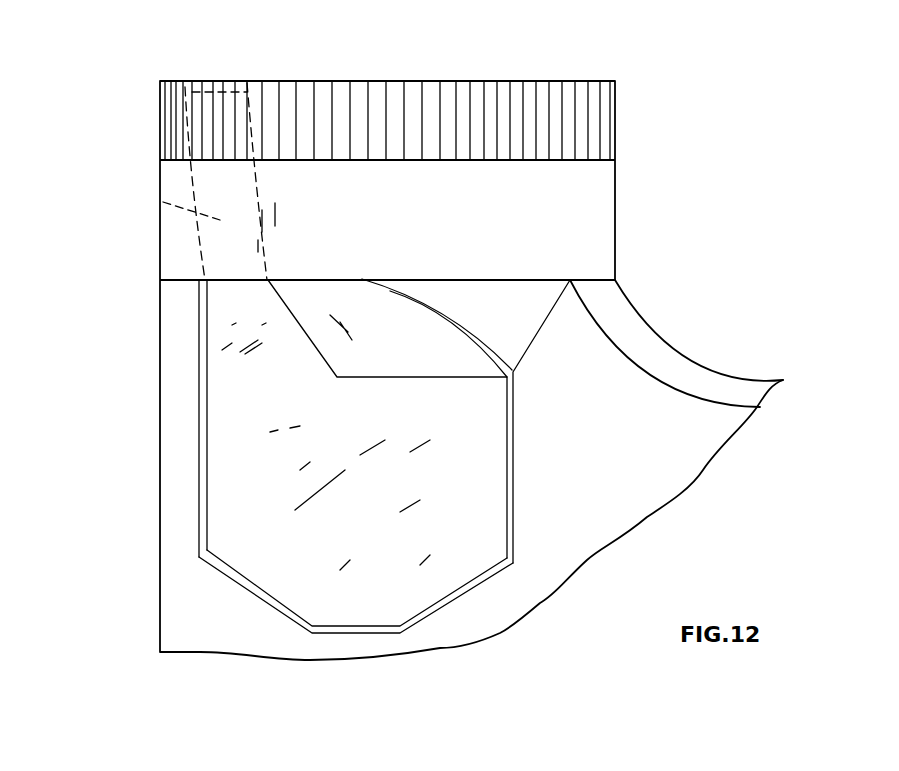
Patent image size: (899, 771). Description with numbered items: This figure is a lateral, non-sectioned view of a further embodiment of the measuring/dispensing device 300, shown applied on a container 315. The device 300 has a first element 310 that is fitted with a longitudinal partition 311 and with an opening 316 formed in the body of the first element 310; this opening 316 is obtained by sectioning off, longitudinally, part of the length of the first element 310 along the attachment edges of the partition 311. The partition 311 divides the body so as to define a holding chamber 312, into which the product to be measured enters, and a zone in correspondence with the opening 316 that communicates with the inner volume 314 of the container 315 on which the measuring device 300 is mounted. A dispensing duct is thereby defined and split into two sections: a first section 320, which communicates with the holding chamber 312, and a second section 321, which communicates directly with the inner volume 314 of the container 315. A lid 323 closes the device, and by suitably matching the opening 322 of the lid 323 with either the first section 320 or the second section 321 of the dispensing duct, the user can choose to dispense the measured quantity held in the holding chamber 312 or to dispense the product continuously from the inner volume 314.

The measuring/dispensing device 300 is at (637, 167).
The first element 310 is at (523, 490).
The longitudinal partition 311 is at (458, 567).
The holding chamber 312 is at (197, 427).
The inner volume 314 is at (613, 408).
The container 315 is at (618, 320).
The opening 316 is at (317, 393).
The first section 320 is at (163, 202).
The second section 321 is at (233, 242).
The opening of lid 322 is at (230, 88).
The lid 323 is at (575, 118).